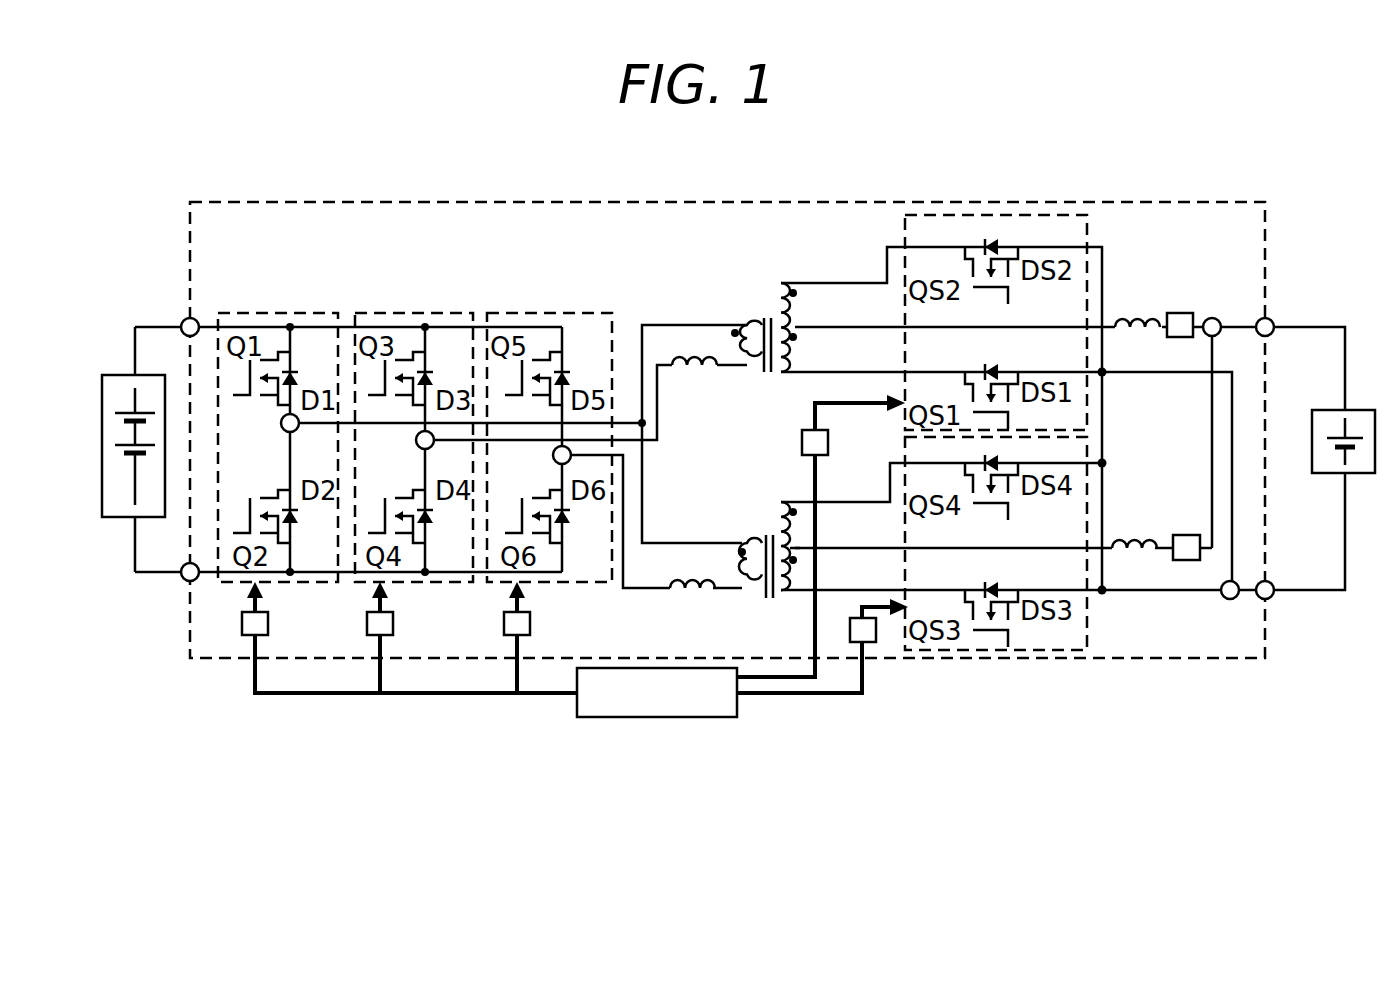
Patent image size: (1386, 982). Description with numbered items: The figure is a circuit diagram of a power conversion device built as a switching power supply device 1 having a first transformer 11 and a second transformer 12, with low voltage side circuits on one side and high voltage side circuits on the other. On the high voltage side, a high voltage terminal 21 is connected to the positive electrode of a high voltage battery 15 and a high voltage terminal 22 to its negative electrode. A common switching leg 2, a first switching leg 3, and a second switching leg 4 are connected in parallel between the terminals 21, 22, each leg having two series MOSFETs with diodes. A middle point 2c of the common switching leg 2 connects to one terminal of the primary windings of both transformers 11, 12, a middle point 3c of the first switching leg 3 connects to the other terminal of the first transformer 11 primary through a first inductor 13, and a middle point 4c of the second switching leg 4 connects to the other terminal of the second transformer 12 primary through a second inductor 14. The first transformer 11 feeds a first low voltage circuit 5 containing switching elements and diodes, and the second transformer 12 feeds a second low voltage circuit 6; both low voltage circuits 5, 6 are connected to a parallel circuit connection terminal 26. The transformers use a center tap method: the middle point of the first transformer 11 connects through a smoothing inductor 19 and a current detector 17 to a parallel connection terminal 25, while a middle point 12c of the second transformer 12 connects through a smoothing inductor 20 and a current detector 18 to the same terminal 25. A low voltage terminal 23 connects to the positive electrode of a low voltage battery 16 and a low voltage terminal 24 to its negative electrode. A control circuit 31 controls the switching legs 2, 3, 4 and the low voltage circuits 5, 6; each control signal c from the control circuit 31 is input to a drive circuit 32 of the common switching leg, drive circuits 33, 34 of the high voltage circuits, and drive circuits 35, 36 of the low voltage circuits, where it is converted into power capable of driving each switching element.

The switching power supply device 1 is at (1190, 660).
The common switching leg 2 is at (278, 313).
The first switching leg 3 is at (420, 313).
The second switching leg 4 is at (548, 313).
The first low voltage circuit 5 is at (996, 322).
The second low voltage circuit 6 is at (996, 543).
The first transformer 11 is at (759, 319).
The second transformer 12 is at (764, 540).
The middle point of second transformer 12c is at (800, 550).
The first inductor 13 is at (694, 372).
The second inductor 14 is at (690, 596).
The high voltage battery 15 is at (126, 375).
The low voltage battery 16 is at (1330, 480).
The current detector 17 is at (1176, 312).
The current detector 18 is at (1182, 562).
The smoothing inductor 19 is at (1122, 312).
The smoothing inductor 20 is at (1134, 538).
The high voltage terminal 21 is at (182, 318).
The high voltage terminal 22 is at (180, 582).
The low voltage terminal 23 is at (1274, 318).
The low voltage terminal 24 is at (1270, 600).
The parallel connection terminal 25 is at (1217, 318).
The parallel circuit connection terminal 26 is at (1232, 600).
The middle point of common switching leg 2c is at (282, 428).
The middle point of first switching leg 3c is at (418, 445).
The middle point of second switching leg 4c is at (556, 454).
The control circuit 31 is at (740, 705).
The drive circuit of common switching leg 32 is at (268, 624).
The drive circuit of high voltage circuit 33 is at (393, 624).
The drive circuit of high voltage circuit 34 is at (530, 624).
The drive circuit of low voltage circuit 35 is at (830, 448).
The drive circuit of low voltage circuit 36 is at (870, 645).
The control signal c is at (860, 400).